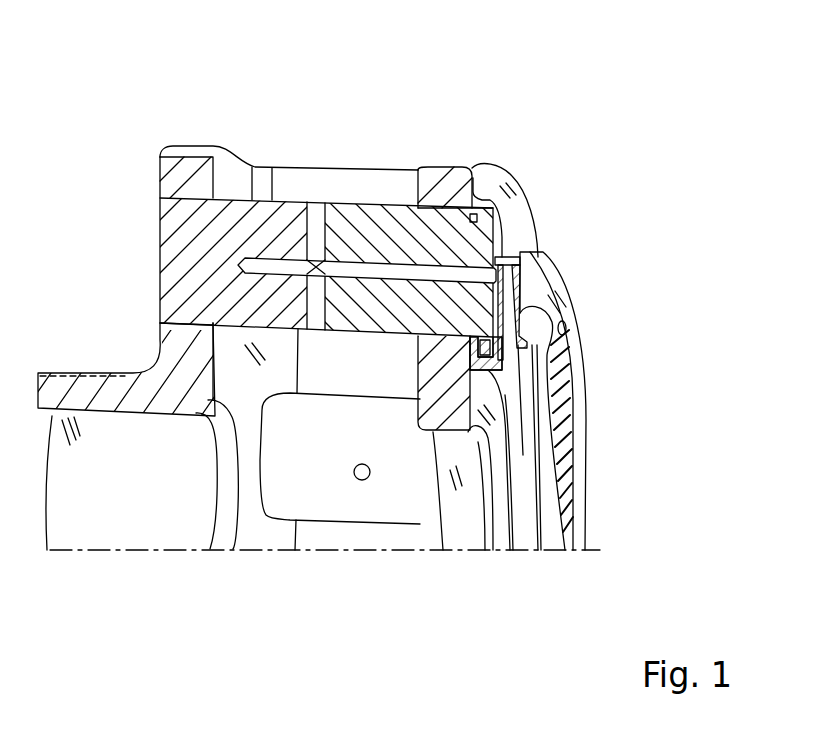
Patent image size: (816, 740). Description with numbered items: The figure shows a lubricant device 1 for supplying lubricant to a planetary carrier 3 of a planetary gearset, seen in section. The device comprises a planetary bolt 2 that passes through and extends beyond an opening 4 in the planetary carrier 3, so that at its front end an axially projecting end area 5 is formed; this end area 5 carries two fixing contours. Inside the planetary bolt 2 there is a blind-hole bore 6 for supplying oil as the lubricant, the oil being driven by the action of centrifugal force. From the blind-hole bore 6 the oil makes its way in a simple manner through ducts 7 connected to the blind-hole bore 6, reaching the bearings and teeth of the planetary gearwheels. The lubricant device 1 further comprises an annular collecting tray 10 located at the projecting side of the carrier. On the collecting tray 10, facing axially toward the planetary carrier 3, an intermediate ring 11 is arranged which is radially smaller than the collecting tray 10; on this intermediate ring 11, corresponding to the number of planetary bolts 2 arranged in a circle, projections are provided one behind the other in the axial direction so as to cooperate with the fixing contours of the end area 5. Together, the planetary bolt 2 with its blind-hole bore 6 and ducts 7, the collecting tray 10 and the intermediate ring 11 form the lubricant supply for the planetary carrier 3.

The lubricant device 1 is at (513, 112).
The planetary bolt 2 is at (408, 240).
The planetary carrier 3 is at (178, 182).
The opening 4 is at (261, 190).
The axially projecting end area 5 is at (518, 233).
The blind-hole bore 6 is at (368, 256).
The ducts 7 is at (315, 235).
The collecting tray 10 is at (558, 313).
The intermediate ring 11 is at (497, 357).